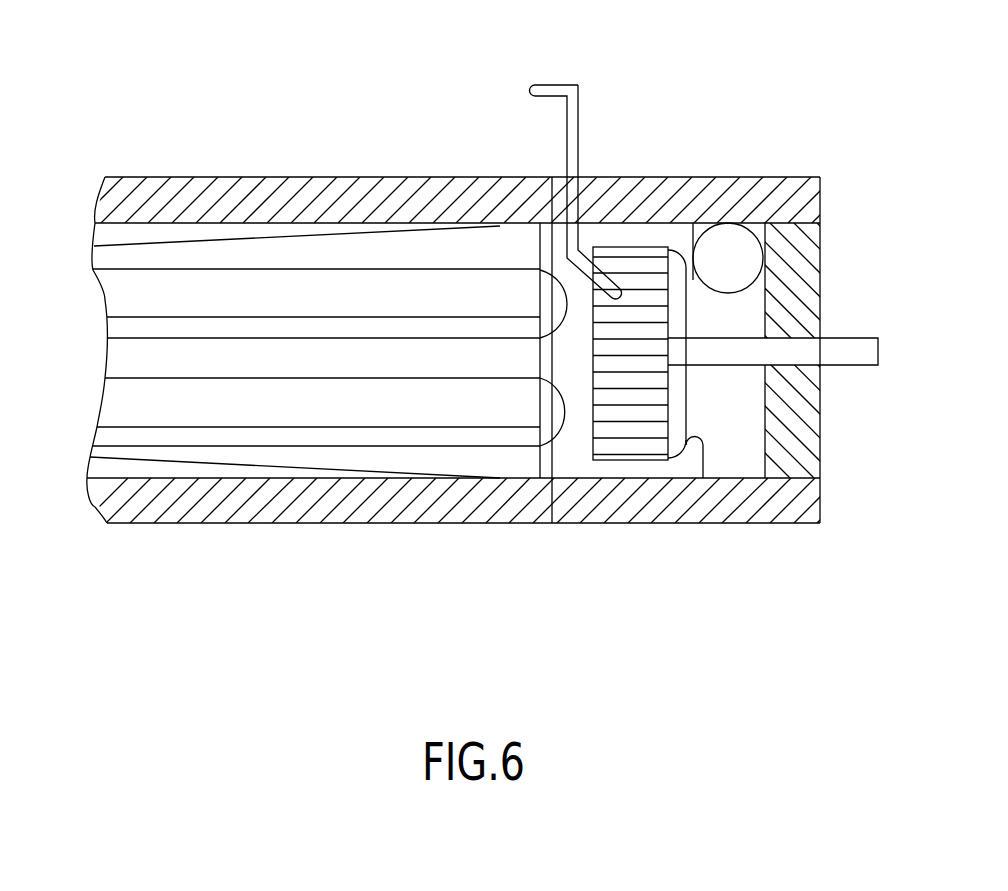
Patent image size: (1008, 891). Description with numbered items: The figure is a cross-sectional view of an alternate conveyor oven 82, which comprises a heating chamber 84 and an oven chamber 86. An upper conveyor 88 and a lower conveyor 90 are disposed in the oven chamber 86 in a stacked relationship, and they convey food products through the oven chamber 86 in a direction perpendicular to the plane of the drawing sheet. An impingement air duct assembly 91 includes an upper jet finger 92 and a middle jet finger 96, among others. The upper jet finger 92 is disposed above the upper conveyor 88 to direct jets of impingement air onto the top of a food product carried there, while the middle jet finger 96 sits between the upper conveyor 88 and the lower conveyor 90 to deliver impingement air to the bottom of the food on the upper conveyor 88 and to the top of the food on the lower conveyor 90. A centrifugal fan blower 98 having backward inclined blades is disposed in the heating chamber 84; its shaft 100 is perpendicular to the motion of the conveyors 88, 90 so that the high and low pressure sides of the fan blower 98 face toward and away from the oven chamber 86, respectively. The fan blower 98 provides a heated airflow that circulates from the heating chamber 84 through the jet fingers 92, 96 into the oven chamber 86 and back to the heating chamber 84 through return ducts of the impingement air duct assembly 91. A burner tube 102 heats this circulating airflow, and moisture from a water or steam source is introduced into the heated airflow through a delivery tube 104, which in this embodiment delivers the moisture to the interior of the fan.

The conveyor oven 82 is at (338, 84).
The heating chamber 84 is at (742, 324).
The oven chamber 86 is at (125, 469).
The upper conveyor 88 is at (143, 330).
The lower conveyor 90 is at (302, 437).
The impingement air duct assembly 91 is at (68, 330).
The upper jet finger 92 is at (465, 252).
The middle jet finger 96 is at (187, 355).
The centrifugal fan blower 98 is at (645, 478).
The shaft 100 is at (859, 338).
The burner tube 102 is at (727, 240).
The delivery tube 104 is at (547, 85).